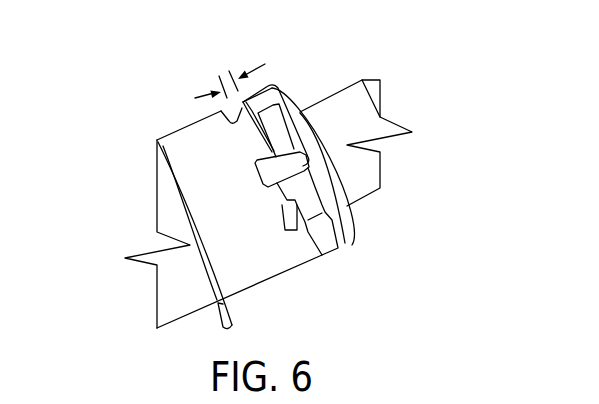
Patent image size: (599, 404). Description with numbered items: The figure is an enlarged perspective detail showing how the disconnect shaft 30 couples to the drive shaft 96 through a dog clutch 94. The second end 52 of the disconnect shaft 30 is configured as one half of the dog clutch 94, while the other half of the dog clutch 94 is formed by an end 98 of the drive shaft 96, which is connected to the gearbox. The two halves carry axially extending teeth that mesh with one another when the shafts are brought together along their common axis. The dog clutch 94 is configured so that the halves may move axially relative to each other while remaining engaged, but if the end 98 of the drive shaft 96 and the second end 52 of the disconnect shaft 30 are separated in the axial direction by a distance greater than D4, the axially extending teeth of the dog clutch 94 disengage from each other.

The disconnect shaft 30 is at (152, 216).
The second end 52 is at (211, 158).
The dog clutch 94 is at (212, 68).
The predetermined distance D4 is at (248, 68).
The drive shaft 96 is at (357, 132).
The end 98 is at (340, 247).